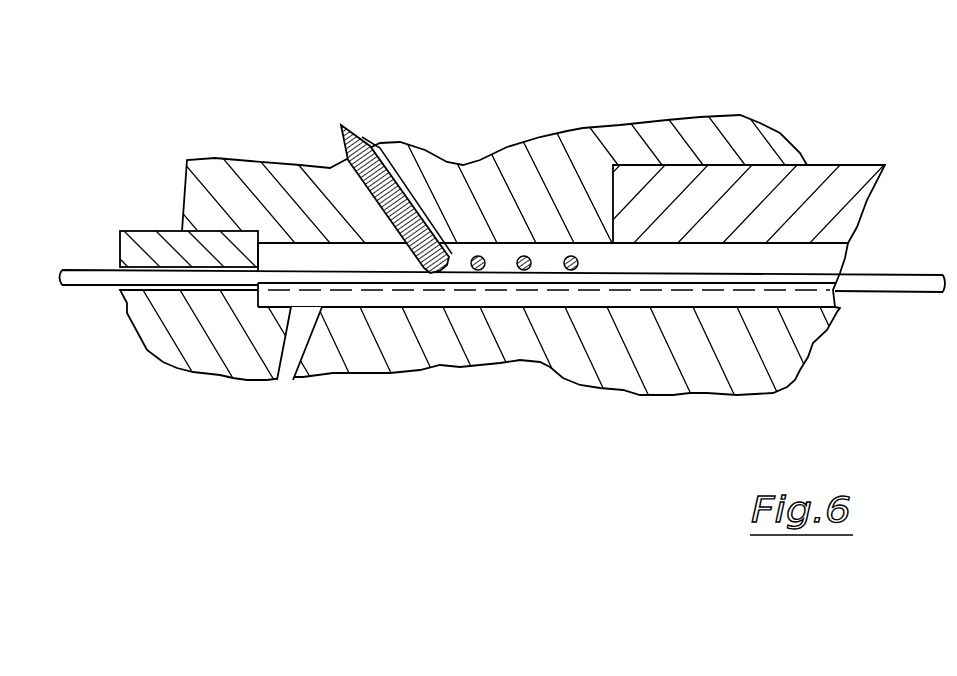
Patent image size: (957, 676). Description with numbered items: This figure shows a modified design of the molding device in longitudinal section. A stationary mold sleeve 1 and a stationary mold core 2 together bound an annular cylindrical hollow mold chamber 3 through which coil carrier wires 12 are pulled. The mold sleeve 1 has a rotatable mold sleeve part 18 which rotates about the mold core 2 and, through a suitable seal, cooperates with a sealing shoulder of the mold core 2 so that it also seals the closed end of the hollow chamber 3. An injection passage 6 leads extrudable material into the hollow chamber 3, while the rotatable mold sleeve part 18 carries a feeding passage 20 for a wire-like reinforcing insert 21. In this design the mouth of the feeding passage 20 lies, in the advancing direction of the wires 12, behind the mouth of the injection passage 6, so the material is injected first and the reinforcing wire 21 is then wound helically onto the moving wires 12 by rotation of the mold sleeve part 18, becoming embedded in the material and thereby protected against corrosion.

The mold sleeve 1 is at (813, 185).
The mold core 2 is at (783, 362).
The hollow mold chamber 3 is at (688, 255).
The injection passage 6 is at (300, 328).
The coil carrier wire 12 is at (222, 280).
The rotatable mold sleeve part 18 is at (213, 185).
The feeding passage 20 is at (345, 162).
The reinforcing wire 21 is at (397, 190).